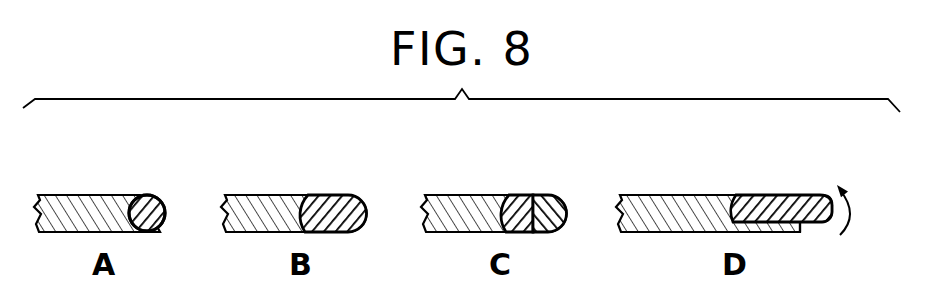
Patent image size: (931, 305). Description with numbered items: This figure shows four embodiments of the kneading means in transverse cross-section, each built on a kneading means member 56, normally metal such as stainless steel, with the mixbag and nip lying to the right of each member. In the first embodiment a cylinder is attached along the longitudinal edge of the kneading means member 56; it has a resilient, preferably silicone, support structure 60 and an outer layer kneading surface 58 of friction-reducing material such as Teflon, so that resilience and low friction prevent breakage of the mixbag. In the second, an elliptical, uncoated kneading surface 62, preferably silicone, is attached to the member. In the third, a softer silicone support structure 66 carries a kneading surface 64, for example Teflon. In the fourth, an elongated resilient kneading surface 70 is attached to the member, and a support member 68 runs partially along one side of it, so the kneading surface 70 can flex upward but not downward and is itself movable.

The kneading means member 56 is at (78, 195).
The kneading surface 58 is at (153, 196).
The support structure 60 is at (161, 208).
The kneading surface 62 is at (340, 195).
The kneading surface 64 is at (556, 195).
The support structure 66 is at (515, 195).
The support member 68 is at (787, 233).
The elongated kneading surface 70 is at (790, 195).